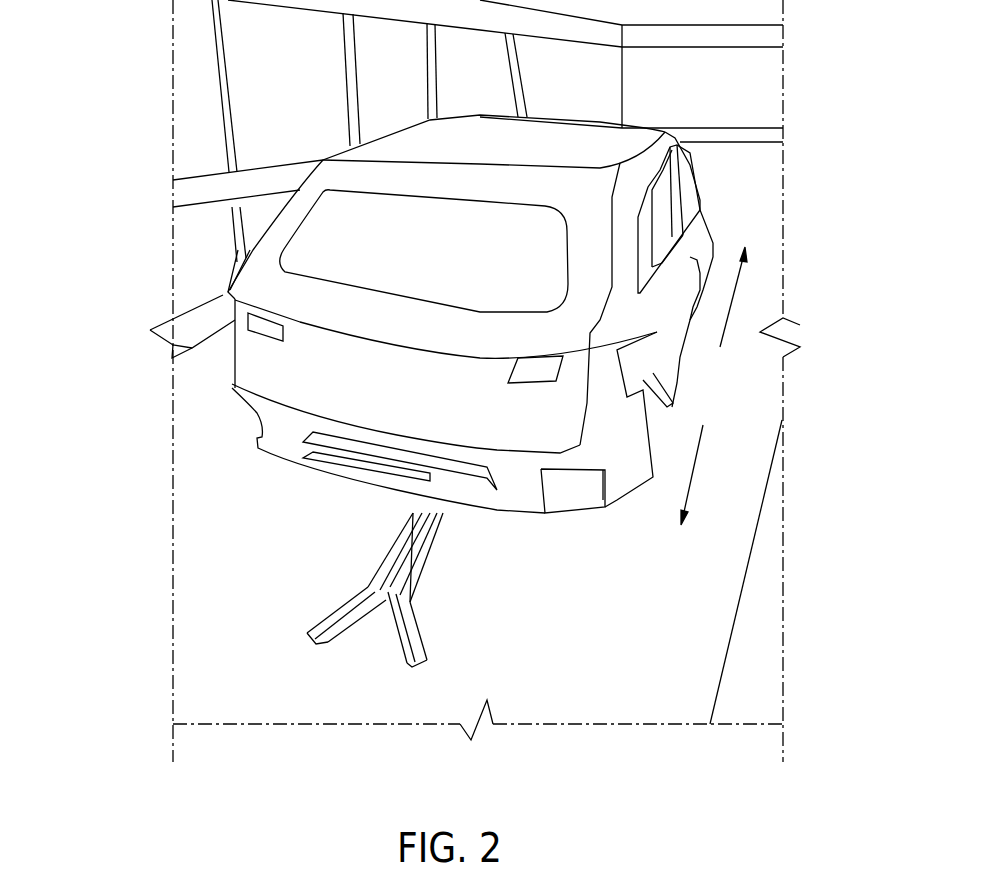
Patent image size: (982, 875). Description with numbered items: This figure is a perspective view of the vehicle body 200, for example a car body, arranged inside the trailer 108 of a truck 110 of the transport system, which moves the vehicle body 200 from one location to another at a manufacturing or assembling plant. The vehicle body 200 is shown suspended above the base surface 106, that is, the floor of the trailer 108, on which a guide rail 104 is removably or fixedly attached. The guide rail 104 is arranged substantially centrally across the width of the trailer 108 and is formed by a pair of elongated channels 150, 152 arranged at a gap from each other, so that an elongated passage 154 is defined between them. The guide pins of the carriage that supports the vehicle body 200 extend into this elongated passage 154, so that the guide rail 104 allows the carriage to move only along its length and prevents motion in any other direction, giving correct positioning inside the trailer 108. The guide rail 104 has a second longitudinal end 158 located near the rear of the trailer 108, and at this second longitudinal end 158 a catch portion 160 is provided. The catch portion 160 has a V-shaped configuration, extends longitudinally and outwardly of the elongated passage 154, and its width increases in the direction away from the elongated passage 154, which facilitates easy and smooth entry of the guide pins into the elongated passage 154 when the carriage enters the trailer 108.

The guide rail 104 is at (411, 581).
The base surface 106 is at (713, 543).
The trailer 108 is at (193, 75).
The truck 110 is at (733, 67).
The elongated channel 150 is at (480, 654).
The elongated channel 152 is at (395, 557).
The elongated passage 154 is at (371, 615).
The second longitudinal end 158 is at (410, 603).
The catch portion 160 is at (323, 641).
The vehicle body 200 is at (268, 366).